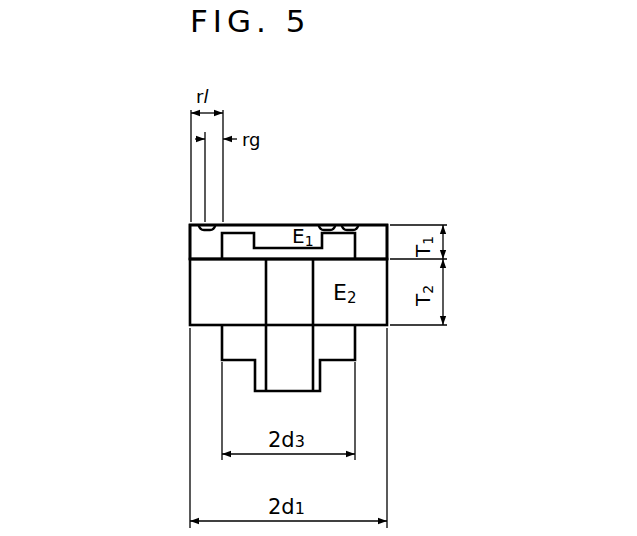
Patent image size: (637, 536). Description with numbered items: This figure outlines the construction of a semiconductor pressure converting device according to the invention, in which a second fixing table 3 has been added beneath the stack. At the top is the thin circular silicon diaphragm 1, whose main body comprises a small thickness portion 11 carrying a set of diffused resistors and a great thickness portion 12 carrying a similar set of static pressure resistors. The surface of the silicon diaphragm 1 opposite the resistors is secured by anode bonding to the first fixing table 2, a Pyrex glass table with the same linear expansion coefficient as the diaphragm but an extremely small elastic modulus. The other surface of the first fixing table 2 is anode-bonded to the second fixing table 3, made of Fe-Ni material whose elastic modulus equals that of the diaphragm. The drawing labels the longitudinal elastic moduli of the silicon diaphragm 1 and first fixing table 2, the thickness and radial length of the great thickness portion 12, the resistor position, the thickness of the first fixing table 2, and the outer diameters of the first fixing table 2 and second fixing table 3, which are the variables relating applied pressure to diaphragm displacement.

The silicon diaphragm 1 is at (283, 224).
The small thickness portion 11 is at (247, 224).
The great thickness portion 12 is at (198, 245).
The first fixing table 2 is at (198, 302).
The second fixing table 3 is at (228, 344).